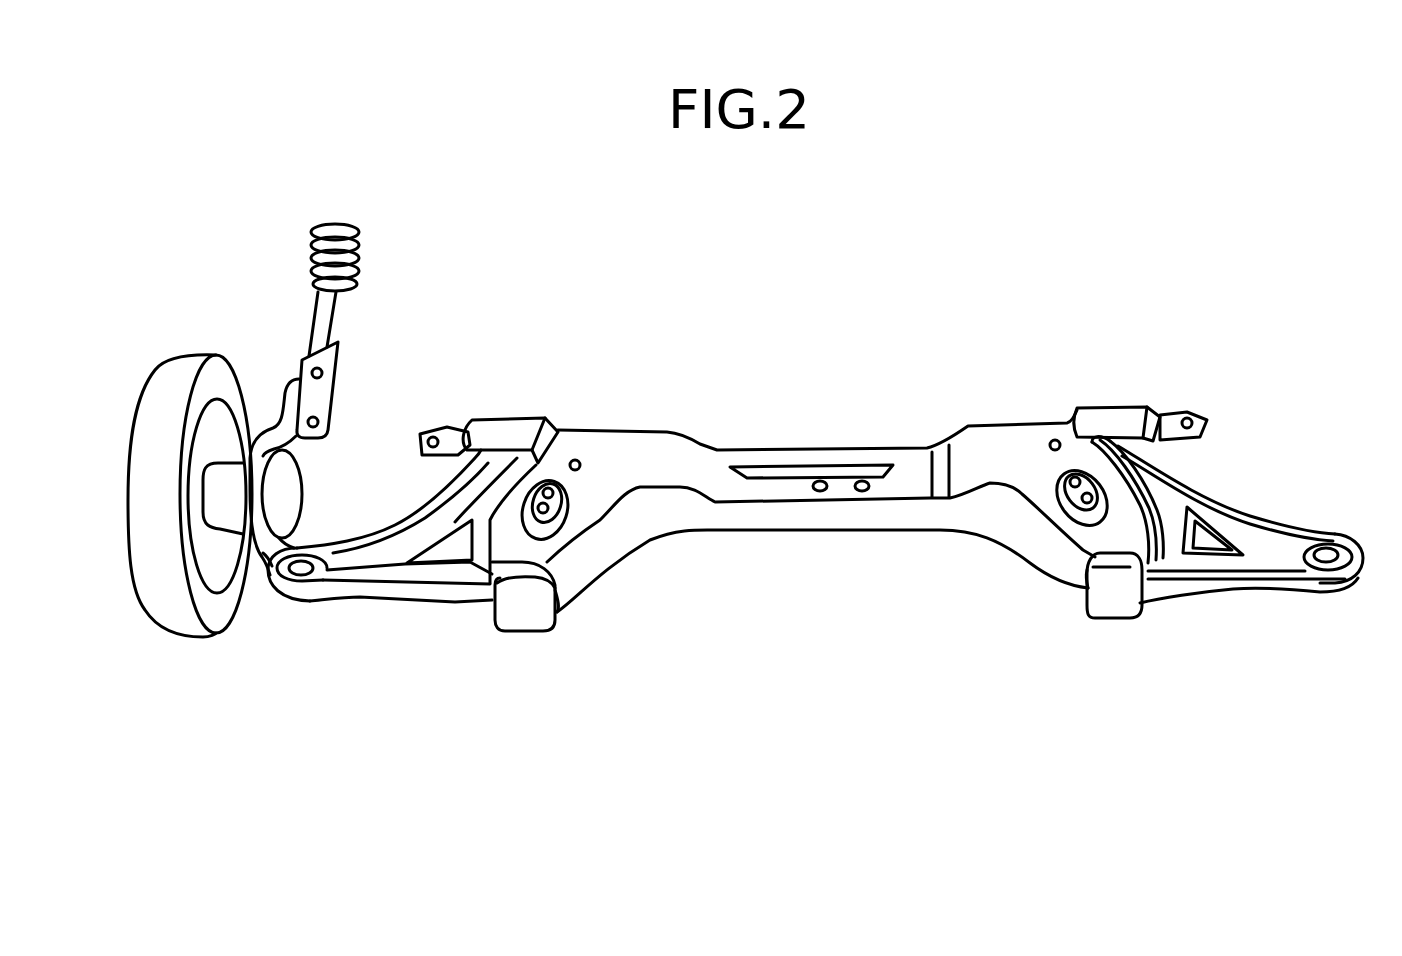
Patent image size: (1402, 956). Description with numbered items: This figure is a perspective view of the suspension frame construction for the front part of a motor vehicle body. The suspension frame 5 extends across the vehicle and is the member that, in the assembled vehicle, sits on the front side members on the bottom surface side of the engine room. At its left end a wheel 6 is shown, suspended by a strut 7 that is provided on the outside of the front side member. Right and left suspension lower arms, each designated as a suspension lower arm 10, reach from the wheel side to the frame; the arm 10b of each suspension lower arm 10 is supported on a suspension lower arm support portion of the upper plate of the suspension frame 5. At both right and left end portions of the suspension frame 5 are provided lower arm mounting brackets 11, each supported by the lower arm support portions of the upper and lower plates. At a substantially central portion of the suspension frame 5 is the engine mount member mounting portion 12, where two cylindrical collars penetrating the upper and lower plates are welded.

The suspension frame 5 is at (968, 440).
The wheel 6 is at (157, 585).
The strut 7 is at (360, 259).
The suspension lower arm 10 is at (472, 572).
The arm 10b is at (490, 469).
The lower arm mounting bracket 11 is at (567, 586).
The engine mount member mounting portion 12 is at (862, 480).